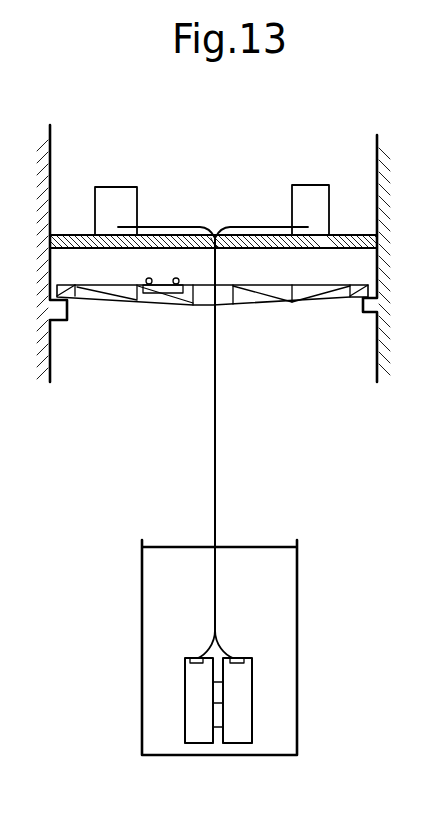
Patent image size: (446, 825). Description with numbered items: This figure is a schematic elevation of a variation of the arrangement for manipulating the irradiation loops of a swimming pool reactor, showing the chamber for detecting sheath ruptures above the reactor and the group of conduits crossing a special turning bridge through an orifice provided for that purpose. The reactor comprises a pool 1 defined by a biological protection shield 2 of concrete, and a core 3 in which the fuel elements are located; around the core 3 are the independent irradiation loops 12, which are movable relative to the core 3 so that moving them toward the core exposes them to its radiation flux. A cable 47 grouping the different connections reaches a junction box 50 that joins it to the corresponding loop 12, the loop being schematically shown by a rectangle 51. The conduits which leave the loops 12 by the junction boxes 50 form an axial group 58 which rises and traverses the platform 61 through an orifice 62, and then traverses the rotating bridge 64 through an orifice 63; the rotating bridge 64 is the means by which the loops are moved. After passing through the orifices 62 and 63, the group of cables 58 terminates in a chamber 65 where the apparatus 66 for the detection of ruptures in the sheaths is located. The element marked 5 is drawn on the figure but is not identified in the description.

The pool 1 is at (263, 593).
The biological protection shield 2 is at (297, 581).
The core 3 is at (217, 682).
The measuring device 5 is at (163, 305).
The irradiation loop 12 is at (246, 716).
The cable 47 is at (228, 645).
The junction box 50 is at (197, 663).
The rectangle 51 is at (252, 733).
The axial group of conduits 58 is at (216, 432).
The platform 61 is at (322, 246).
The orifice 62 is at (218, 243).
The orifice 63 is at (222, 297).
The rotating bridge 64 is at (323, 297).
The chamber 65 is at (228, 218).
The apparatus for detection of ruptures 66 is at (302, 195).